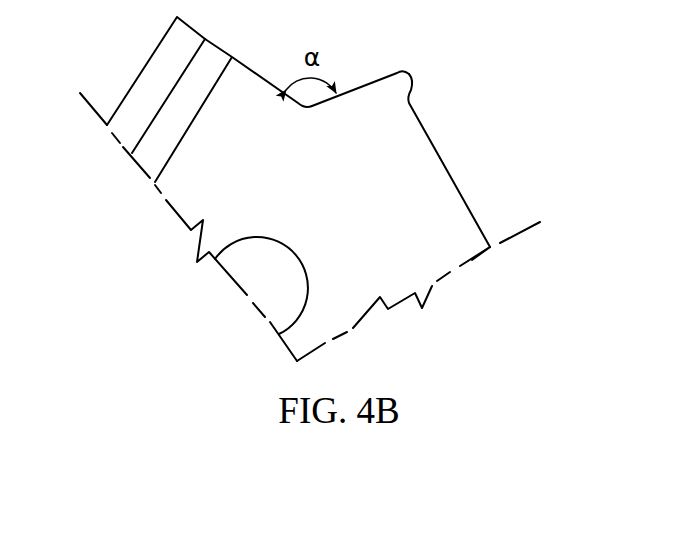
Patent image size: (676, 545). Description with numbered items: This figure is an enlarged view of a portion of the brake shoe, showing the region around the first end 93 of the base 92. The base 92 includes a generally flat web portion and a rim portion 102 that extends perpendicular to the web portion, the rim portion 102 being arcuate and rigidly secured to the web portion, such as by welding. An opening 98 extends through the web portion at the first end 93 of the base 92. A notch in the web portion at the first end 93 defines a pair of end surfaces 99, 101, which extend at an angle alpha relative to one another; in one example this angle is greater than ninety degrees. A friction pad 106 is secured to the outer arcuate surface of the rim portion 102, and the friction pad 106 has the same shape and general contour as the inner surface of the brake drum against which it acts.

The base 92 is at (455, 214).
The first end 93 is at (436, 99).
The opening 98 is at (307, 239).
The end surface 99 is at (373, 82).
The end surface 101 is at (247, 66).
The rim portion 102 is at (187, 67).
The friction pad 106 is at (142, 83).